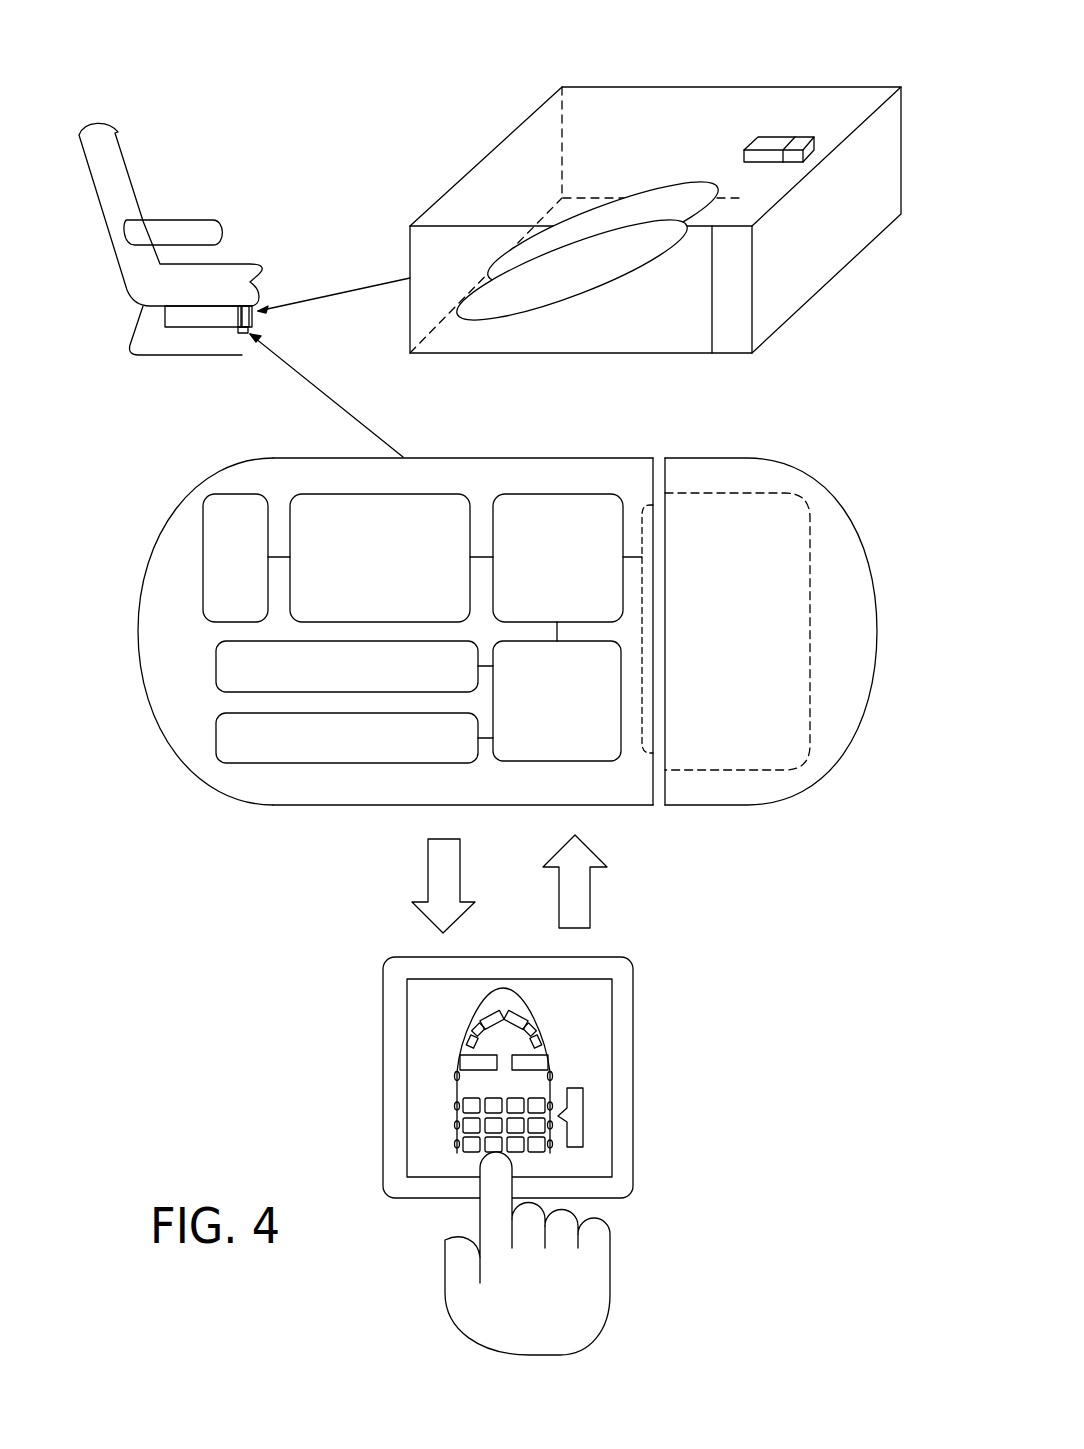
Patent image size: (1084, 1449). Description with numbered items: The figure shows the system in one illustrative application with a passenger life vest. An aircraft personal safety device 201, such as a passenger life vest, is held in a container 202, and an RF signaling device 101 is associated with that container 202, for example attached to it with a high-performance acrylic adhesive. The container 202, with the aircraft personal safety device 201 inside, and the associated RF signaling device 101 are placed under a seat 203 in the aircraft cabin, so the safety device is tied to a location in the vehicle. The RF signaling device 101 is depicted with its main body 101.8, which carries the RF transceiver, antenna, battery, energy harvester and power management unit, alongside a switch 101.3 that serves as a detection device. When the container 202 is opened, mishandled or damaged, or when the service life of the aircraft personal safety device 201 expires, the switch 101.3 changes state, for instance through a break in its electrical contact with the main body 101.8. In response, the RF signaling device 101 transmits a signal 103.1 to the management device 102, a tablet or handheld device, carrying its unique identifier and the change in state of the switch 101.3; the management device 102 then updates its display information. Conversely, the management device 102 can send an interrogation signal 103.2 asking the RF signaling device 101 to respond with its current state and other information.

The RF signaling device 101 is at (150, 562).
The switch 101.3 is at (803, 137).
The main body 101.8 is at (766, 136).
The management device 102 is at (383, 1068).
The signal 103.1 is at (427, 877).
The signal 103.2 is at (592, 890).
The aircraft personal safety device 201 is at (580, 310).
The container 202 is at (464, 176).
The seat 203 is at (118, 132).